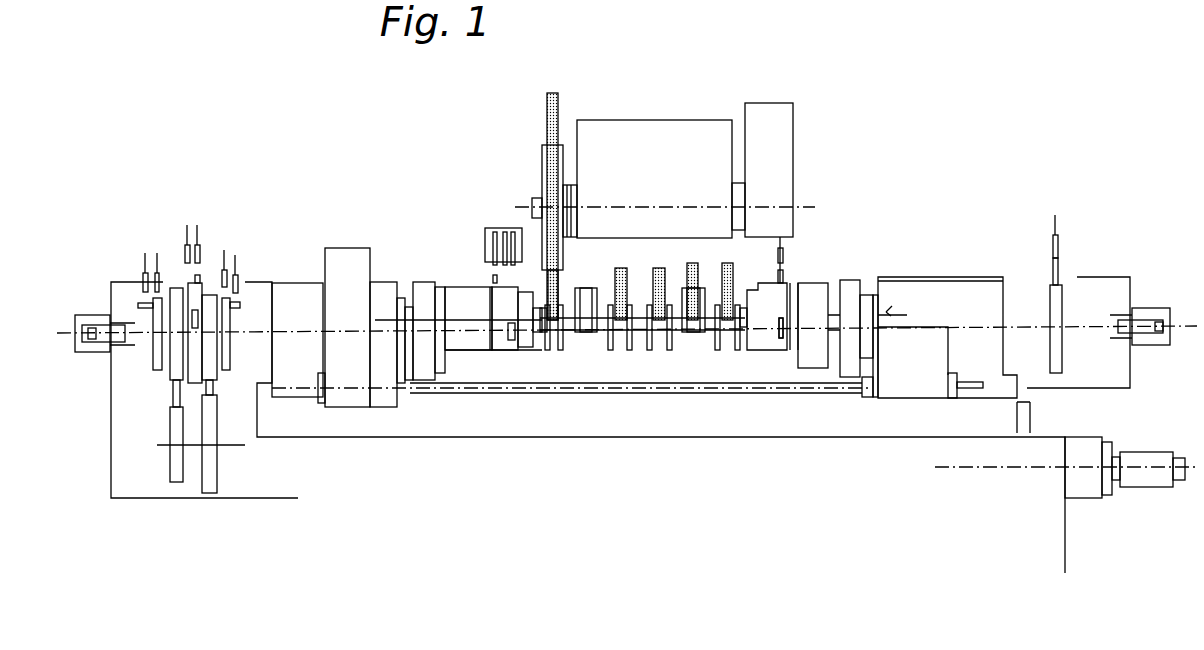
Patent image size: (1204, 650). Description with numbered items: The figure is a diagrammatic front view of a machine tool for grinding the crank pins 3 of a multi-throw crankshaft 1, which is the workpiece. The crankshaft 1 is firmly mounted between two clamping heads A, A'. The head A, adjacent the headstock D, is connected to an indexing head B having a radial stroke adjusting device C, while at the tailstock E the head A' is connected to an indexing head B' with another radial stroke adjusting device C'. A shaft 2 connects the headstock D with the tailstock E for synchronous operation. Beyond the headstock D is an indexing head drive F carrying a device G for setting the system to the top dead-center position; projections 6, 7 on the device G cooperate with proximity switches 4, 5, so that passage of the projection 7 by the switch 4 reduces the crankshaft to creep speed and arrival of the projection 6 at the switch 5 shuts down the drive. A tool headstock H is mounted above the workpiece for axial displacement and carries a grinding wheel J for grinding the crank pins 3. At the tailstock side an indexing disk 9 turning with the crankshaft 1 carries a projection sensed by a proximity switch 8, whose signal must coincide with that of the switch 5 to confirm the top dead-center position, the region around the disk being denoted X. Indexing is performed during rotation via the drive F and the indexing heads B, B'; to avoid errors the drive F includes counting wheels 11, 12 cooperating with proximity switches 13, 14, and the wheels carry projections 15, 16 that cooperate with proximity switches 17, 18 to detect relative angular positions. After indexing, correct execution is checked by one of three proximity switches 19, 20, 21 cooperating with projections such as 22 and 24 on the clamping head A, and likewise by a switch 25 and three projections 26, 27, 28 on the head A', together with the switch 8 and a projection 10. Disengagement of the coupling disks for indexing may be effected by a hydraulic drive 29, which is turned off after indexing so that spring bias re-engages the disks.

The crankshaft 1 is at (675, 320).
The shaft 2 is at (582, 386).
The crank pins 3 is at (693, 300).
The switch 4 is at (185, 252).
The switch 5 is at (197, 243).
The projection 6 is at (200, 280).
The projection 7 is at (200, 318).
The switch 8 is at (1060, 242).
The indexing disk 9 is at (1052, 318).
The projection 10 is at (1057, 275).
The counting wheel 11 is at (157, 360).
The counting wheel 12 is at (233, 360).
The proximity switch 13 is at (157, 275).
The proximity switch 14 is at (228, 270).
The projection 15 is at (147, 307).
The projection 16 is at (238, 305).
The proximity switch 17 is at (143, 283).
The proximity switch 18 is at (238, 278).
The proximity switch 19 is at (493, 248).
The proximity switch 20 is at (505, 248).
The proximity switch 21 is at (513, 248).
The projection 22 is at (492, 278).
The projection 24 is at (515, 342).
The switch 25 is at (784, 255).
The projection 26 is at (785, 278).
The projection 27 is at (780, 326).
The projection 28 is at (781, 328).
The hydraulic drive 29 is at (100, 350).
The clamping head A is at (488, 394).
The indexing head B is at (434, 391).
The radial stroke adjusting device C is at (396, 404).
The headstock D is at (380, 372).
The tailstock E is at (958, 278).
The indexing head drive F is at (176, 455).
The device G is at (195, 372).
The tool headstock H is at (660, 143).
The grinding wheel J is at (560, 103).
The position X is at (888, 312).
The clamping head A' is at (774, 393).
The indexing head B' is at (827, 393).
The radial stroke adjusting device C' is at (871, 391).